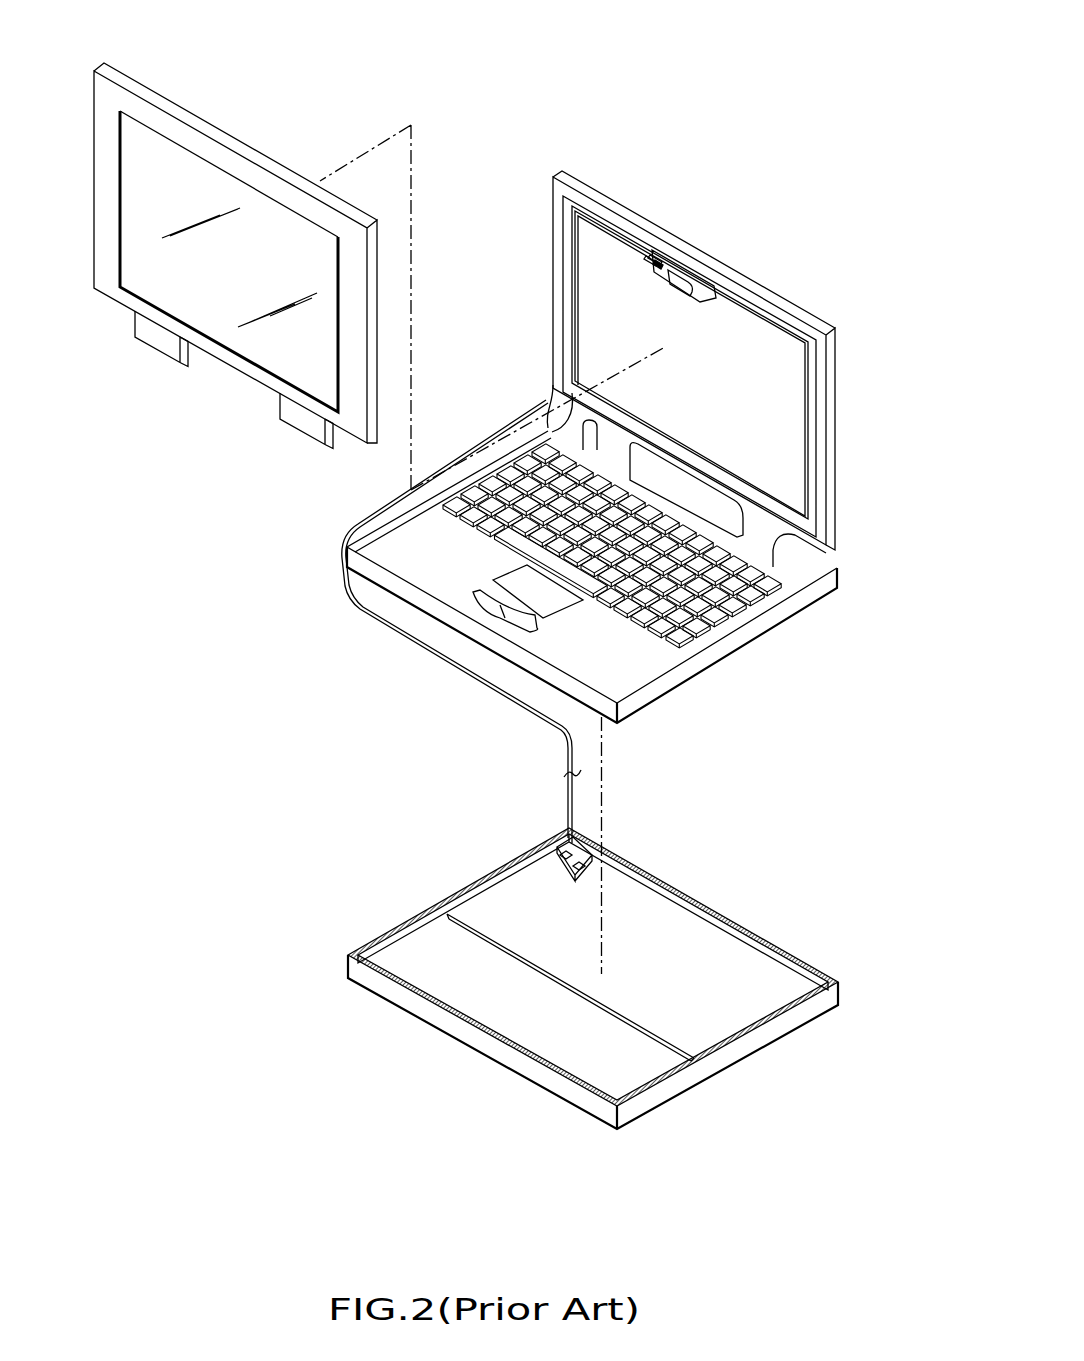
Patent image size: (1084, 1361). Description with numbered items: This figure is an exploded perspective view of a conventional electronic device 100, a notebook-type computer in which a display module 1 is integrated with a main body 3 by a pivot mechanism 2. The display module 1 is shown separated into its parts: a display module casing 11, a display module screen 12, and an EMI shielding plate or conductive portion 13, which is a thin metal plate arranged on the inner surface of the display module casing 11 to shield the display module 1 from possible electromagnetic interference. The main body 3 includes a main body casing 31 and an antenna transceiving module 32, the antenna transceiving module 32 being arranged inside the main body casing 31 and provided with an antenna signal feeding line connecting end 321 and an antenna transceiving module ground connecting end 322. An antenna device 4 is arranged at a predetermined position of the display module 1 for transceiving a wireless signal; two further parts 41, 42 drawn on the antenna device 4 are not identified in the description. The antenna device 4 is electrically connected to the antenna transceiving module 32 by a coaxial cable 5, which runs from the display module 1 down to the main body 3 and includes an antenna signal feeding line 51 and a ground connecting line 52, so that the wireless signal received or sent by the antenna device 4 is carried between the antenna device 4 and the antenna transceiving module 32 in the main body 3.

The electronic device 100 is at (768, 155).
The display module 1 is at (274, 50).
The display module casing 11 is at (774, 301).
The display module screen 12 is at (255, 349).
The conductive portion 13 is at (788, 455).
The pivot mechanism 2 is at (550, 412).
The main body 3 is at (868, 575).
The main body casing 31 is at (773, 1027).
The antenna transceiving module 32 is at (550, 843).
The antenna signal feeding line connecting end 321 is at (557, 832).
The antenna transceiving module ground connecting end 322 is at (577, 867).
The antenna device 4 is at (712, 293).
The sensing element 41 is at (693, 294).
The latch 42 is at (669, 282).
The coaxial cable 5 is at (602, 223).
The antenna signal feeding line 51 is at (663, 245).
The ground connecting line 52 is at (652, 258).